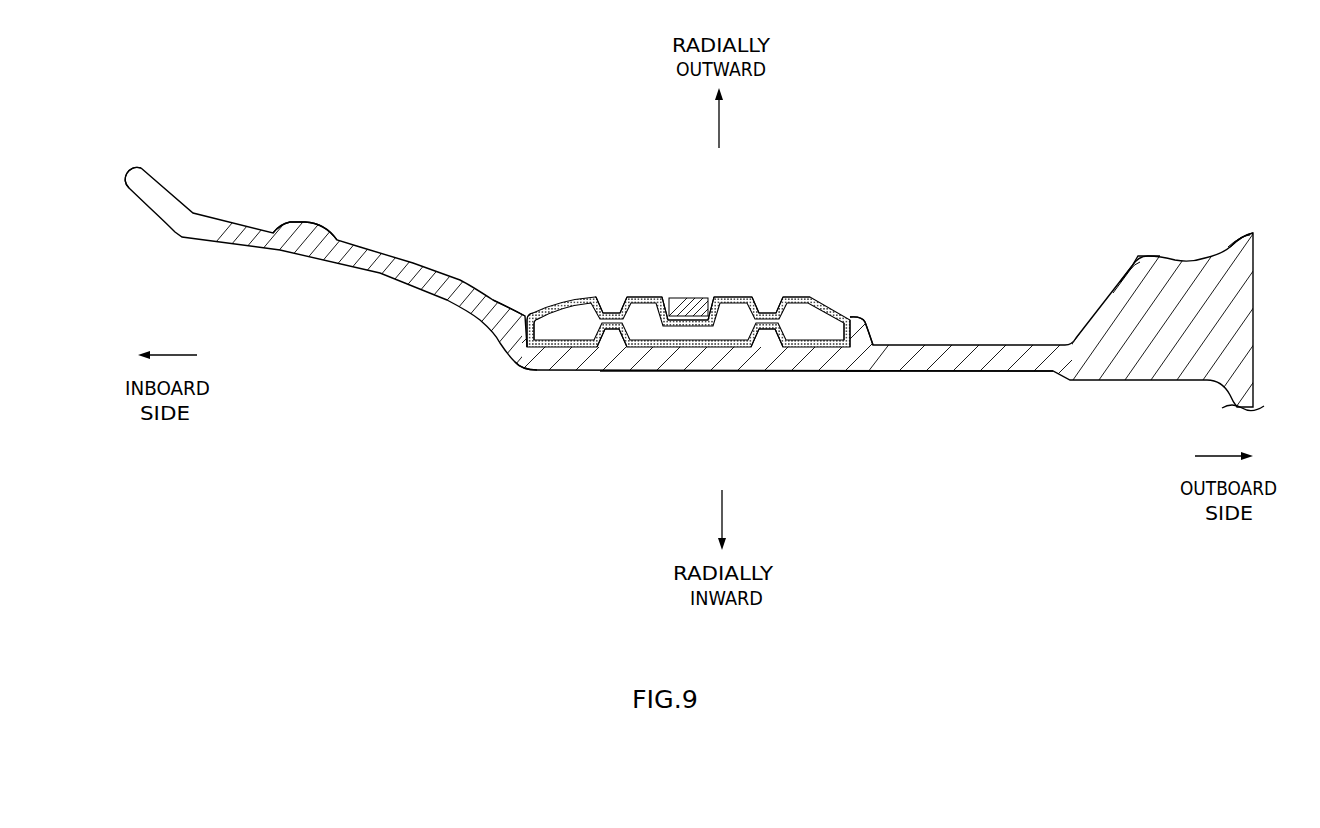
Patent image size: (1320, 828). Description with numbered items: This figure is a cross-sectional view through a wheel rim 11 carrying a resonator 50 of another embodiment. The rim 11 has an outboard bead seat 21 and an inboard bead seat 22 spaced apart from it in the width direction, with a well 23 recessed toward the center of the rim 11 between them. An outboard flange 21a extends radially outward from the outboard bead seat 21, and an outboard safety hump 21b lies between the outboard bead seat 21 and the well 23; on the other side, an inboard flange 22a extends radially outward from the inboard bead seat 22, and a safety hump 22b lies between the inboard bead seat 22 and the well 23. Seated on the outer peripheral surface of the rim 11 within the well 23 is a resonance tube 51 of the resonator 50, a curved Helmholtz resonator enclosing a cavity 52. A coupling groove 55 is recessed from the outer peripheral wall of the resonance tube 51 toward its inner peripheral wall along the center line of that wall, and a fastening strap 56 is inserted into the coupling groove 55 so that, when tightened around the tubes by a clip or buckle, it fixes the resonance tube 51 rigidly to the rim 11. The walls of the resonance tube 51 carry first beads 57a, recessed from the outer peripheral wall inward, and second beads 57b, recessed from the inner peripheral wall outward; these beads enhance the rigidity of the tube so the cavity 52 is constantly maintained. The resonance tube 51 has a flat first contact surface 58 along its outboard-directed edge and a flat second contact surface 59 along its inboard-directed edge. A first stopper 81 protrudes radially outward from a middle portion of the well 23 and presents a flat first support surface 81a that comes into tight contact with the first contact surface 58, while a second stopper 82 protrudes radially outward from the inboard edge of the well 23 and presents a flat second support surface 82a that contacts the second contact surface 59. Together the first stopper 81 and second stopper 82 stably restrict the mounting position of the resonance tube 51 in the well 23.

The rim 11 is at (648, 378).
The outboard bead seat 21 is at (1195, 262).
The outboard flange 21a is at (1233, 244).
The outboard safety hump 21b is at (1150, 262).
The inboard bead seat 22 is at (243, 216).
The inboard flange 22a is at (158, 186).
The safety hump 22b is at (308, 232).
The well 23 is at (793, 360).
The resonator 50 is at (827, 214).
The resonance tube 51 is at (639, 288).
The cavity 52 is at (735, 312).
The coupling groove 55 is at (700, 303).
The fastening strap 56 is at (676, 297).
The first beads 57a is at (610, 298).
The second beads 57b is at (610, 340).
The first contact surface 58 is at (855, 320).
The second contact surface 59 is at (530, 320).
The first stopper 81 is at (862, 328).
The first support surface 81a is at (843, 356).
The second stopper 82 is at (511, 290).
The second support surface 82a is at (535, 358).